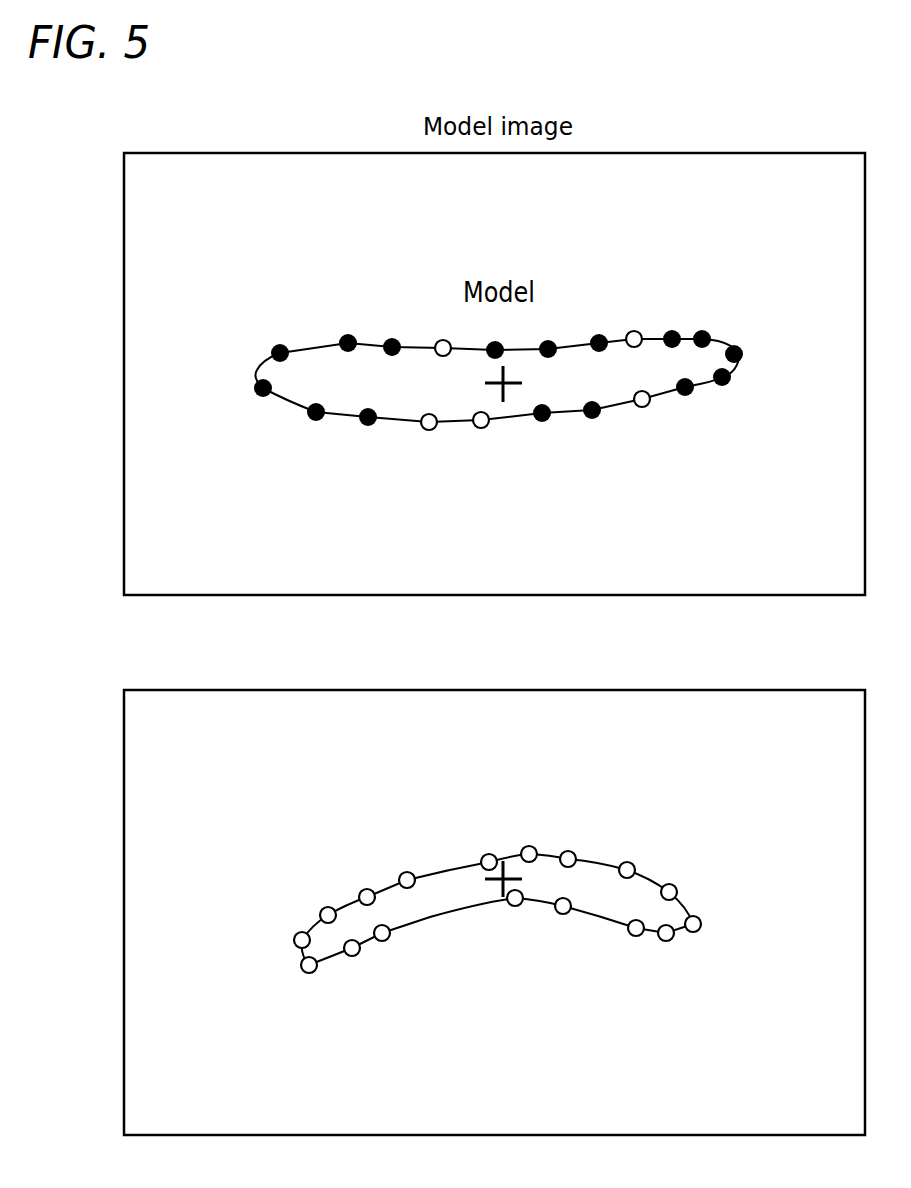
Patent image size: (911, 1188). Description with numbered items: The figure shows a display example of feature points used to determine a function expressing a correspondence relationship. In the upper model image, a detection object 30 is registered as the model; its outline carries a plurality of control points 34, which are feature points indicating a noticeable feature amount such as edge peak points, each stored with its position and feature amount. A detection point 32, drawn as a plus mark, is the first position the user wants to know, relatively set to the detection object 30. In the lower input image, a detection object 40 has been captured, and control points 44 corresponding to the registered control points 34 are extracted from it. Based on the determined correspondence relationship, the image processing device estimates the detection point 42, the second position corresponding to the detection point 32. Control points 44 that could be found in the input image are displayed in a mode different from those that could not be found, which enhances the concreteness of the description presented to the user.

The detection object (model) 30 is at (662, 375).
The detection point 32 is at (507, 388).
The control points 34 is at (669, 332).
The detection object 40 is at (653, 917).
The detection point 42 is at (497, 887).
The control points 44 is at (625, 865).